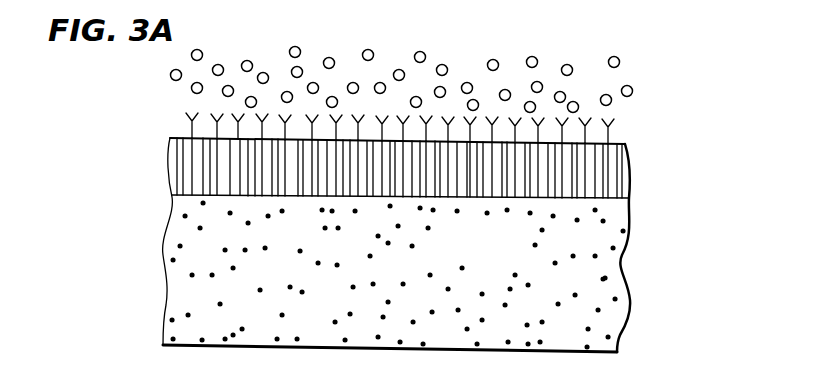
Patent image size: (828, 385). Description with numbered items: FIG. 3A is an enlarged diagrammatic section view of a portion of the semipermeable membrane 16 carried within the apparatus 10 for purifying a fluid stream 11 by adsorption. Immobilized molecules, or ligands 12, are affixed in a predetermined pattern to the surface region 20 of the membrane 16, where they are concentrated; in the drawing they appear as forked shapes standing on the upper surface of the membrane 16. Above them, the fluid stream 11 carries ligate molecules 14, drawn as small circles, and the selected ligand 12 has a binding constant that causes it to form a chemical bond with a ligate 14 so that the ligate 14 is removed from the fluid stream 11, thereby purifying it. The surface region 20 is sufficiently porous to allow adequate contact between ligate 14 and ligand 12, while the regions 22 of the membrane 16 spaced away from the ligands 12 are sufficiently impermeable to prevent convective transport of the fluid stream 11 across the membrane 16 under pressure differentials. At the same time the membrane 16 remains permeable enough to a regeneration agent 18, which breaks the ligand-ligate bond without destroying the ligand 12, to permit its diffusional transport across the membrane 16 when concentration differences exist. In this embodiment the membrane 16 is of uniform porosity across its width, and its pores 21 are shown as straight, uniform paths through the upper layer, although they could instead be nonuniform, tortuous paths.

The apparatus 10 is at (665, 92).
The fluid stream 11 is at (457, 63).
The ligand 12 is at (217, 129).
The ligate 14 is at (295, 47).
The semipermeable membrane 16 is at (647, 218).
The regeneration agent 18 is at (512, 238).
The surface region 20 is at (620, 143).
The pores 21 is at (231, 168).
The regions spaced away from the ligands 22 is at (630, 178).